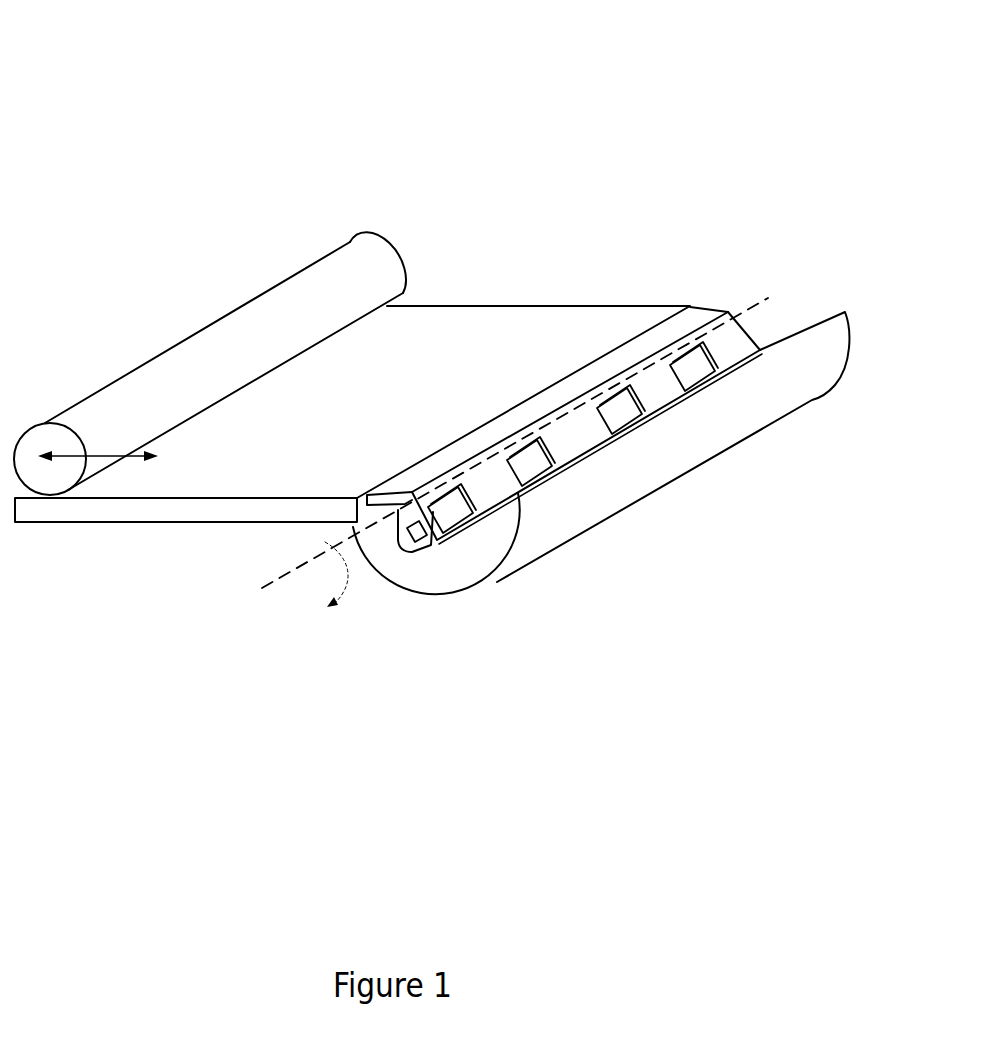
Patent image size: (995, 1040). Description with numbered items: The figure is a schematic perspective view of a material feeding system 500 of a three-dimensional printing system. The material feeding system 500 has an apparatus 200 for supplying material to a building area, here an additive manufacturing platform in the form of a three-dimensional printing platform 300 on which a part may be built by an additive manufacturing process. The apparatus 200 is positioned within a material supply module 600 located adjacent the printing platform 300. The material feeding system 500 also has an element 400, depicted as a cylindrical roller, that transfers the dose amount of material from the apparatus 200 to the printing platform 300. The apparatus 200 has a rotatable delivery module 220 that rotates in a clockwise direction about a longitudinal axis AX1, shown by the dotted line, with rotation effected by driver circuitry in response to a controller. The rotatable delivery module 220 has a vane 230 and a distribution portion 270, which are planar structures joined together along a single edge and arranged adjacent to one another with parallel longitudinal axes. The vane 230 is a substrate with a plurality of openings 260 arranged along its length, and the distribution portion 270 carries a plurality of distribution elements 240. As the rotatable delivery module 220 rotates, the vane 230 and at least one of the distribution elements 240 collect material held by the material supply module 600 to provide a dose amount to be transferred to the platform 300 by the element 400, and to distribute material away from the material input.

The material feeding system 500 is at (103, 78).
The element 400 is at (352, 240).
The three-dimensional printing platform 300 is at (118, 522).
The apparatus 200 is at (750, 308).
The rotatable delivery module 220 is at (709, 311).
The vane 230 is at (355, 522).
The openings 260 is at (688, 373).
The distribution elements 240 is at (423, 552).
The distribution portion 270 is at (450, 535).
The material supply module 600 is at (578, 537).
The longitudinal axis AX1 is at (277, 582).